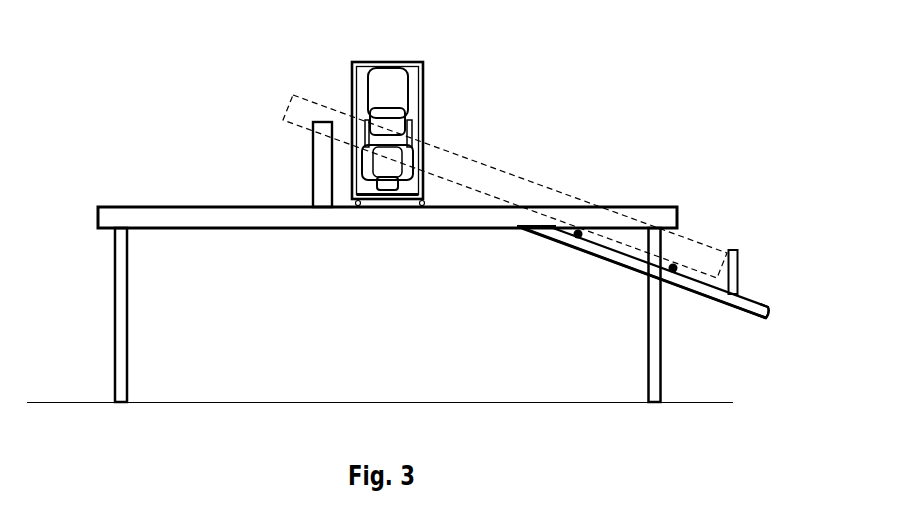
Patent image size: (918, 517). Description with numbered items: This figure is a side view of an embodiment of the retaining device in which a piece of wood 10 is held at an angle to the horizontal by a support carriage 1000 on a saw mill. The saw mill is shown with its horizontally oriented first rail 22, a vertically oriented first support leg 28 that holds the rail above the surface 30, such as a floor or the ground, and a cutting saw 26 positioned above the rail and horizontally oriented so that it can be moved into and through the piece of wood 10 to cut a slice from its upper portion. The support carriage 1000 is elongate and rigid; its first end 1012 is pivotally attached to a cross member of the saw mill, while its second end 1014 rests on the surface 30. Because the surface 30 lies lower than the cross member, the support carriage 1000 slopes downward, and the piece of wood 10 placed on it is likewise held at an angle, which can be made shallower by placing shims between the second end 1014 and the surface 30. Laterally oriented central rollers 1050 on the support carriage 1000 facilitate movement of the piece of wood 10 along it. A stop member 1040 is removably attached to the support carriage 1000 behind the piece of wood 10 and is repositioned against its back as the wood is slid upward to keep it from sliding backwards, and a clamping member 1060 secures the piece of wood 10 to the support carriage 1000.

The piece of wood 10 is at (455, 166).
The first rail 22 is at (173, 217).
The cutting saw 26 is at (425, 78).
The first support leg 28 is at (662, 332).
The surface 30 is at (65, 402).
The support carriage 1000 is at (618, 248).
The first end 1012 is at (497, 207).
The second end 1014 is at (767, 302).
The stop member 1040 is at (732, 249).
The central rollers 1050 is at (673, 270).
The clamping member 1060 is at (312, 160).